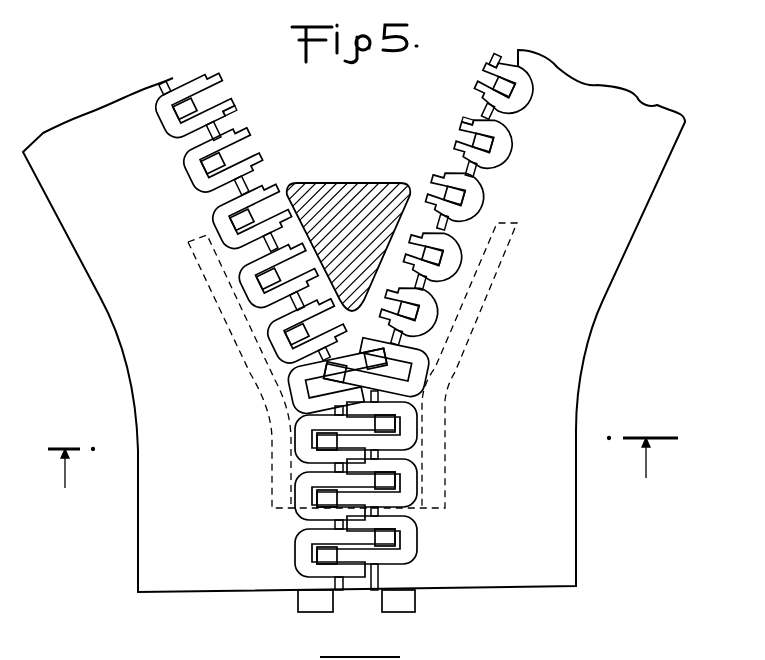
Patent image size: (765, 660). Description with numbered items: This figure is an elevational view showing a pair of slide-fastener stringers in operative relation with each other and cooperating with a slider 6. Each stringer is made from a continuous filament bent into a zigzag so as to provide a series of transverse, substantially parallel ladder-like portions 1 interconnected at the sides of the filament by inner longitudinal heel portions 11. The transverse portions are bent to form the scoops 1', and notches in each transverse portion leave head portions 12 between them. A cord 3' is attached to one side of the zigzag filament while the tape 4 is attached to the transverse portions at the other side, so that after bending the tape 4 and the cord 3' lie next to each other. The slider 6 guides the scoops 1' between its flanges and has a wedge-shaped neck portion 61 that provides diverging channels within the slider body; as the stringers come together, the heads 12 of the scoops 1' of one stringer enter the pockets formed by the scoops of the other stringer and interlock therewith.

The ladder-like portions 1 is at (360, 88).
The scoops 1' is at (330, 49).
The inner longitudinal heel portions 11 is at (190, 168).
The head portions 12 is at (223, 79).
The wedge-shaped neck portion 61 is at (363, 183).
The slider 6 is at (508, 326).
The tape 4 is at (193, 585).
The cord 3' is at (345, 608).